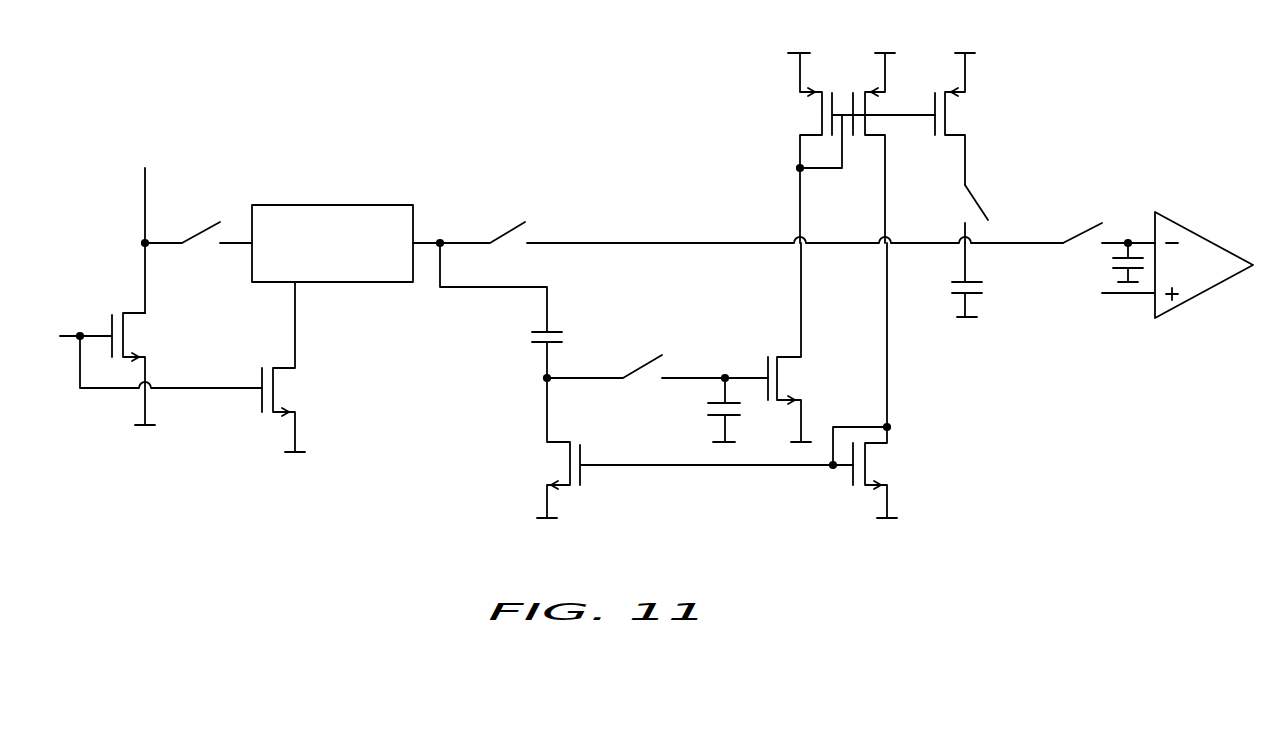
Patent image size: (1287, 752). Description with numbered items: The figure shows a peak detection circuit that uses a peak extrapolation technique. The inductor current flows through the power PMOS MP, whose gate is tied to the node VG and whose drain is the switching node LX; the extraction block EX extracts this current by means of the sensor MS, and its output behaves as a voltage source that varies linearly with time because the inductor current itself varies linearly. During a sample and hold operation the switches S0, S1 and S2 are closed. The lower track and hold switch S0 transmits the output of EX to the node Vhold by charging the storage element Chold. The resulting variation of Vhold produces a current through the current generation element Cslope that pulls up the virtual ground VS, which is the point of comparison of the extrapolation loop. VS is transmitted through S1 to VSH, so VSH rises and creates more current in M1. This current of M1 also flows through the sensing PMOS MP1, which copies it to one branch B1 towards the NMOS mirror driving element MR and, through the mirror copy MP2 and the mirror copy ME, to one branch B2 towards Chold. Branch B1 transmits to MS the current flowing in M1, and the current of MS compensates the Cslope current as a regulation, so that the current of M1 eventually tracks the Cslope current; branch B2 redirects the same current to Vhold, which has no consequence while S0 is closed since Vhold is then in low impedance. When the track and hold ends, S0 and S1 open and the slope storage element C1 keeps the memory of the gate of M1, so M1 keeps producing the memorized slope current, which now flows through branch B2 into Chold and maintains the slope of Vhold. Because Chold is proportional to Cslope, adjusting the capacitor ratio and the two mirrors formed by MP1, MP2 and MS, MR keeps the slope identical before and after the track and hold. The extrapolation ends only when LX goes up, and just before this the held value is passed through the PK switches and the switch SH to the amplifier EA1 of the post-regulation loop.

The LX node LX is at (192, 227).
The power PMOS MP is at (128, 354).
The gate voltage VG is at (161, 375).
The mirror for the extrapolation loop MS is at (553, 400).
The extraction block EX is at (332, 229).
The track and hold switch S0 is at (506, 237).
The hold node Vhold is at (831, 229).
The current generation element Cslope is at (500, 310).
The virtual ground VS is at (529, 380).
The track and hold switch S1 is at (657, 373).
The gate node of M1 VSH is at (727, 363).
The slope storage element C1 is at (711, 410).
The NMOS transistor M1 is at (797, 342).
The first branch B1 is at (943, 335).
The NMOS mirror driving element MR is at (872, 471).
The PMOS mirror driving element MP1 is at (856, 135).
The PMOS mirror copy for extrapolation loop MP2 is at (880, 135).
The mirror copy for extrapolation ME is at (964, 119).
The second branch B2 is at (1021, 155).
The switch S2 is at (1007, 213).
The track and hold storage element Chold is at (1003, 280).
The sample and hold switch S&H SH is at (1109, 220).
The PK switches PK is at (1110, 261).
The error amplifier EA1 is at (1170, 280).